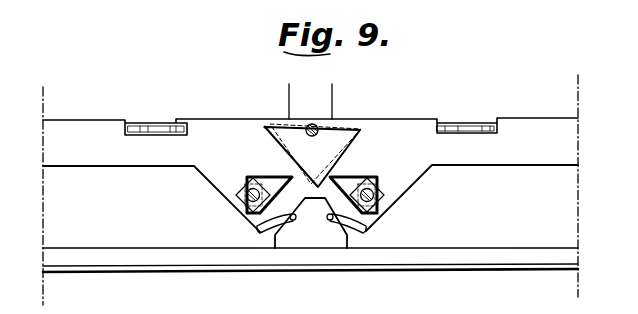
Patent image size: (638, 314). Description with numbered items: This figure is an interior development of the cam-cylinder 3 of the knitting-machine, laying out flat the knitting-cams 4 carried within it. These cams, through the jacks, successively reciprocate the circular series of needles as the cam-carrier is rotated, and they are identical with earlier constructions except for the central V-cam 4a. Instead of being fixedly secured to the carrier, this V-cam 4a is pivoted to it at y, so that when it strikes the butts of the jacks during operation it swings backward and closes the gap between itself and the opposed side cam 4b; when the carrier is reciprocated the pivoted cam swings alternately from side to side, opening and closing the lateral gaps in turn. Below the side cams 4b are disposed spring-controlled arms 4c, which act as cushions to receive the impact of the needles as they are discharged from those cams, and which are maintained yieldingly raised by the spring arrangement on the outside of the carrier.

The cam-cylinder 3 is at (310, 138).
The knitting-cams 4 is at (434, 199).
The central V-cam 4a is at (333, 137).
The side cam 4b is at (272, 178).
The spring-controlled arms 4c is at (258, 230).
The pivot y is at (303, 127).